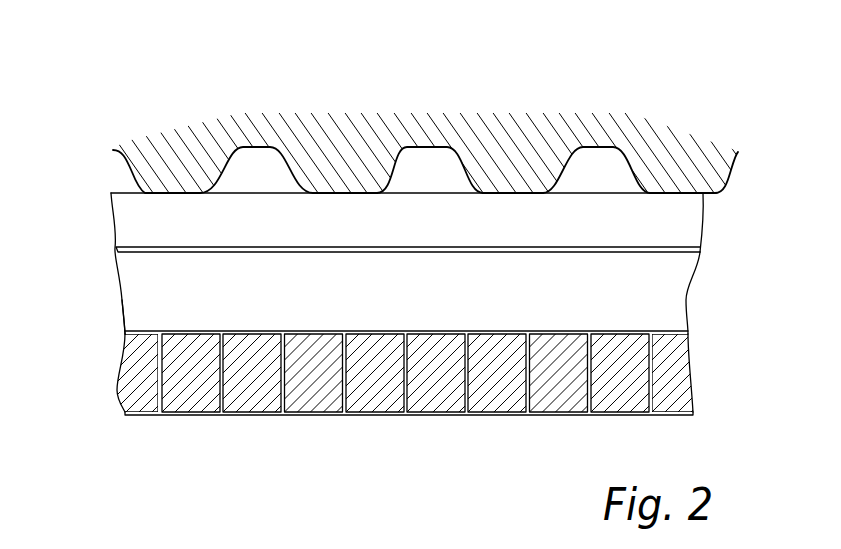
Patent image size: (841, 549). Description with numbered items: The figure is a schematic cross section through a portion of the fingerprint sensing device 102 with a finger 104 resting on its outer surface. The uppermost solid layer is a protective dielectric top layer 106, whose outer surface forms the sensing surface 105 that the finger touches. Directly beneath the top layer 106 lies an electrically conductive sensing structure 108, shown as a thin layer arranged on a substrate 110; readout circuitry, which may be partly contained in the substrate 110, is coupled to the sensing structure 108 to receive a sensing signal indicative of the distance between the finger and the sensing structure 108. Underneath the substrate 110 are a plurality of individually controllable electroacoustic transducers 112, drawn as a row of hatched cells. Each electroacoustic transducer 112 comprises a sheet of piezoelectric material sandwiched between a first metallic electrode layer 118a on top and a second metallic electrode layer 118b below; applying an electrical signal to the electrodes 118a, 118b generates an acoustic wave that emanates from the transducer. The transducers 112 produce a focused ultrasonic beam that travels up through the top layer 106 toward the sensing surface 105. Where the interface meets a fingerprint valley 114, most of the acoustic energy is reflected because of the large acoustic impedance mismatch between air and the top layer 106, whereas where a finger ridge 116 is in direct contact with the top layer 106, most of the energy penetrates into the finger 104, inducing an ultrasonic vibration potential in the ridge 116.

The fingerprint sensing device 102 is at (107, 175).
The finger 104 is at (730, 110).
The sensing surface 105 is at (625, 193).
The protective dielectric top layer 106 is at (702, 225).
The electrically conductive sensing structure 108 is at (130, 250).
The substrate 110 is at (685, 295).
The electroacoustic transducer 112 is at (667, 373).
The fingerprint valley 114 is at (258, 170).
The finger ridge 116 is at (530, 193).
The first metallic electrode layer 118a is at (688, 331).
The second metallic electrode layer 118b is at (693, 415).